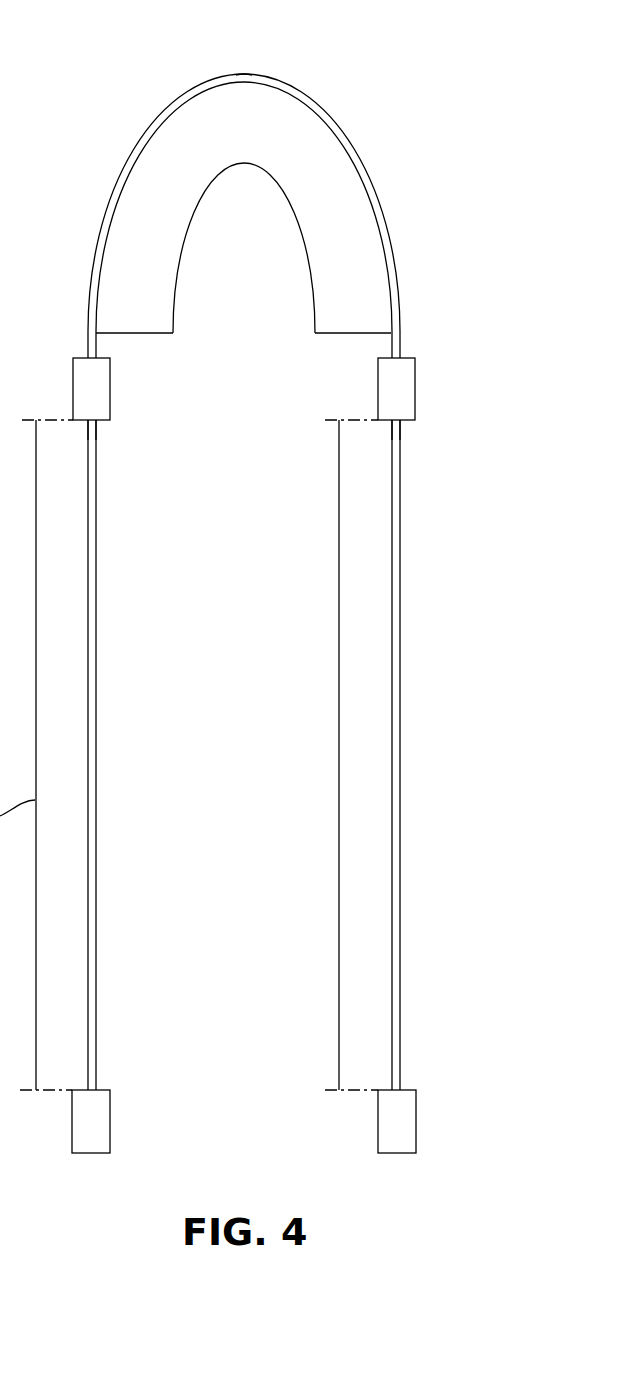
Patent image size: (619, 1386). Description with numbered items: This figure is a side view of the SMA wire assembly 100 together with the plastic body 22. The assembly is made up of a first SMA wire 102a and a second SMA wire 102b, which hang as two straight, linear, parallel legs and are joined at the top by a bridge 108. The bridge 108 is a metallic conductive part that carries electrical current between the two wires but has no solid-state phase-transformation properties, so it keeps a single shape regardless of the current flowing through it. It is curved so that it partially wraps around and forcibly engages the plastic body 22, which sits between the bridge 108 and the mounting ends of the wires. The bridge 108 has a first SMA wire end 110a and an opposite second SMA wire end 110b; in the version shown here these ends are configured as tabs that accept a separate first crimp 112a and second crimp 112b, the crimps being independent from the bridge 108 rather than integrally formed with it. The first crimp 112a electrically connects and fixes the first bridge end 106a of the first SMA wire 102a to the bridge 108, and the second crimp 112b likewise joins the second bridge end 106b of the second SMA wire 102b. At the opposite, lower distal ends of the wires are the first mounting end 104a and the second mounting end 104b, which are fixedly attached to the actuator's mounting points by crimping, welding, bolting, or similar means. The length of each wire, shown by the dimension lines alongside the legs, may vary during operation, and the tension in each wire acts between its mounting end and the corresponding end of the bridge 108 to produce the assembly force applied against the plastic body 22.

The SMA wire assembly 100 is at (368, 88).
The bridge 108 is at (246, 74).
The plastic body 22 is at (345, 238).
The first SMA wire end 110a is at (88, 352).
The second SMA wire end 110b is at (398, 352).
The first crimp 112a is at (93, 391).
The second crimp 112b is at (389, 380).
The first SMA wire 102a is at (97, 743).
The second SMA wire 102b is at (402, 743).
The first bridge end 106a is at (92, 428).
The second bridge end 106b is at (397, 428).
The first mounting end 104a is at (90, 1153).
The second mounting end 104b is at (397, 1153).